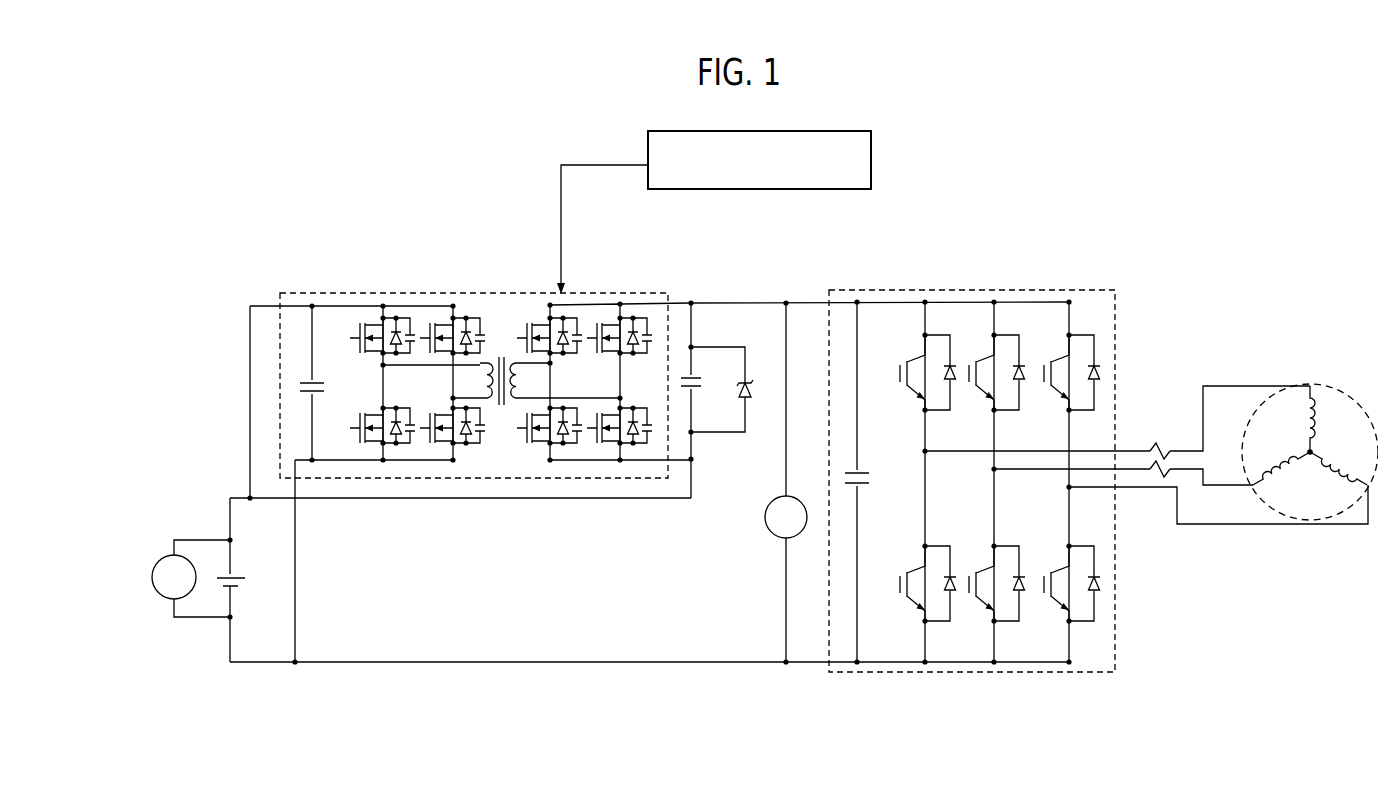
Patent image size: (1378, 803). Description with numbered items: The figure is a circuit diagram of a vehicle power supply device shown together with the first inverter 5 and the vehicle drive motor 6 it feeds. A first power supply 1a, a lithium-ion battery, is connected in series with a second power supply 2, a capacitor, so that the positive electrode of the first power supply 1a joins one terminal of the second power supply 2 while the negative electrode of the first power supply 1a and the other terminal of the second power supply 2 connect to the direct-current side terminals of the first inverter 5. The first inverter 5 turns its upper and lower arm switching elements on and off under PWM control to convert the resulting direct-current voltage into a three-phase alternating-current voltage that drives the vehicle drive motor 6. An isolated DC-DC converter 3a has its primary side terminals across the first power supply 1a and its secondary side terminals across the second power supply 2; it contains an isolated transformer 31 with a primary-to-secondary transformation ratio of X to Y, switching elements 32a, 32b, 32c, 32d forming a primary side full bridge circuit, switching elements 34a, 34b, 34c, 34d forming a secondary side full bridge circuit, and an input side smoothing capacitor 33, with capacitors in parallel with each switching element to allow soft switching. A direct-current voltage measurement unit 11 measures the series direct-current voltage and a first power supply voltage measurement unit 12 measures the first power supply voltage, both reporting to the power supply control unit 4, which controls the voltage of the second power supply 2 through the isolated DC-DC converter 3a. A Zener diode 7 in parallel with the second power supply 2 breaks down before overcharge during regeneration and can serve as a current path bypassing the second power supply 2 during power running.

The first power supply 1a is at (244, 574).
The second power supply 2 is at (700, 382).
The isolated DC-DC converter 3a is at (280, 293).
The power supply control unit 4 is at (872, 165).
The first inverter 5 is at (1062, 290).
The vehicle drive motor 6 is at (1348, 393).
The Zener diode 7 is at (750, 382).
The direct-current voltage measurement unit 11 is at (766, 524).
The first power supply voltage measurement unit 12 is at (155, 560).
The isolated transformer 31 is at (500, 410).
The switching element 32a is at (358, 322).
The switching element 32b is at (428, 322).
The switching element 32c is at (358, 450).
The switching element 32d is at (428, 450).
The input side smoothing capacitor 33 is at (300, 380).
The switching element 34a is at (523, 322).
The switching element 34b is at (593, 322).
The switching element 34c is at (525, 450).
The switching element 34d is at (595, 450).